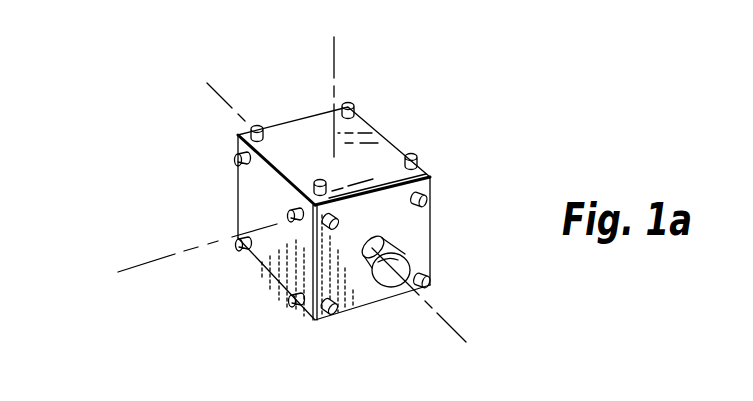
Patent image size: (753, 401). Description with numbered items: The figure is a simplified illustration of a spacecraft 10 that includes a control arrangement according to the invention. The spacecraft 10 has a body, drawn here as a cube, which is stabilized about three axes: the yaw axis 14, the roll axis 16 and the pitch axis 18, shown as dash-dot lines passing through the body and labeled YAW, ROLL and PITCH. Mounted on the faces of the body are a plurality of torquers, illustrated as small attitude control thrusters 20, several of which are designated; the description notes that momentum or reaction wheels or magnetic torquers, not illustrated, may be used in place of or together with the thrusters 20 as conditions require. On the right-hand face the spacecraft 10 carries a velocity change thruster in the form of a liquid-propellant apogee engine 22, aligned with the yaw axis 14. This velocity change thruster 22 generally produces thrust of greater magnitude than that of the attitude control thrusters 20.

The spacecraft 10 is at (497, 196).
The yaw axis 14 is at (458, 331).
The roll axis 16 is at (336, 59).
The pitch axis 18 is at (213, 244).
The thrusters 20 is at (233, 160).
The liquid-propellant apogee engine 22 is at (390, 291).